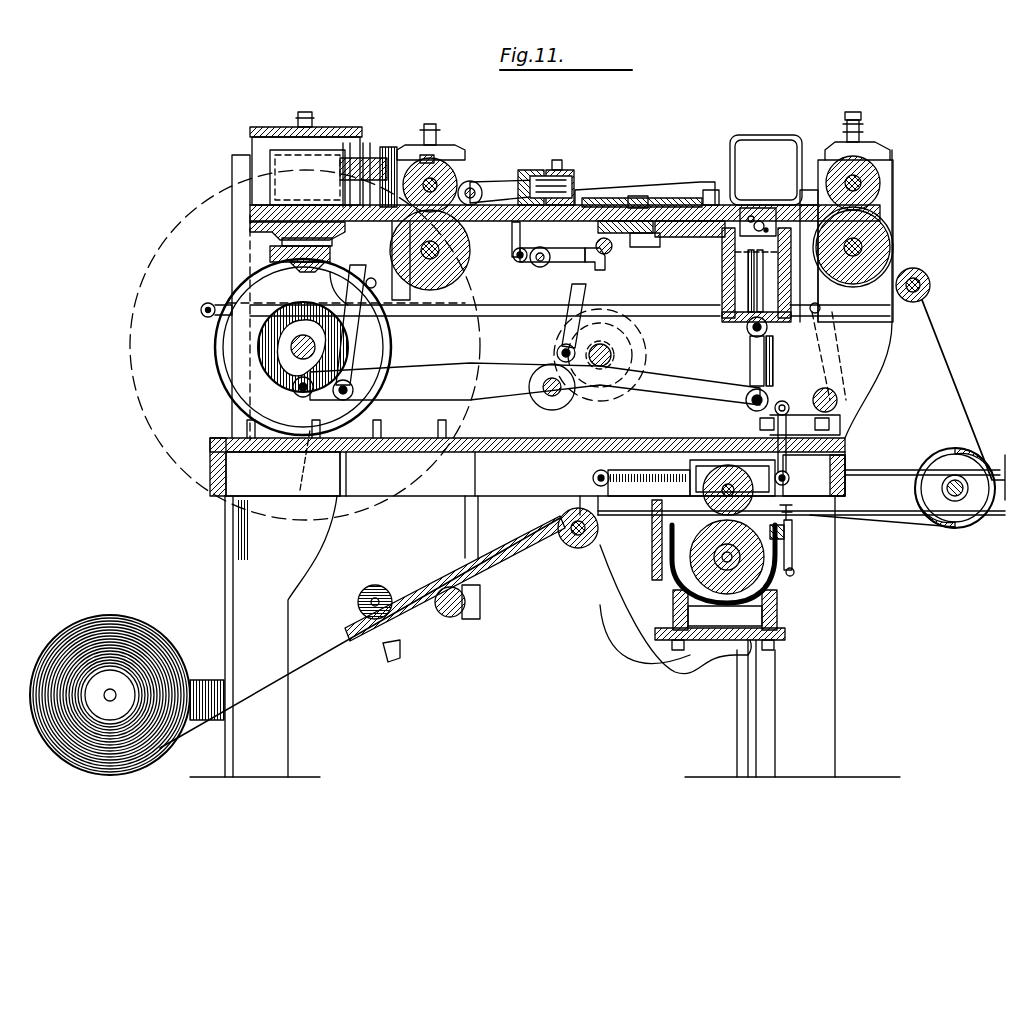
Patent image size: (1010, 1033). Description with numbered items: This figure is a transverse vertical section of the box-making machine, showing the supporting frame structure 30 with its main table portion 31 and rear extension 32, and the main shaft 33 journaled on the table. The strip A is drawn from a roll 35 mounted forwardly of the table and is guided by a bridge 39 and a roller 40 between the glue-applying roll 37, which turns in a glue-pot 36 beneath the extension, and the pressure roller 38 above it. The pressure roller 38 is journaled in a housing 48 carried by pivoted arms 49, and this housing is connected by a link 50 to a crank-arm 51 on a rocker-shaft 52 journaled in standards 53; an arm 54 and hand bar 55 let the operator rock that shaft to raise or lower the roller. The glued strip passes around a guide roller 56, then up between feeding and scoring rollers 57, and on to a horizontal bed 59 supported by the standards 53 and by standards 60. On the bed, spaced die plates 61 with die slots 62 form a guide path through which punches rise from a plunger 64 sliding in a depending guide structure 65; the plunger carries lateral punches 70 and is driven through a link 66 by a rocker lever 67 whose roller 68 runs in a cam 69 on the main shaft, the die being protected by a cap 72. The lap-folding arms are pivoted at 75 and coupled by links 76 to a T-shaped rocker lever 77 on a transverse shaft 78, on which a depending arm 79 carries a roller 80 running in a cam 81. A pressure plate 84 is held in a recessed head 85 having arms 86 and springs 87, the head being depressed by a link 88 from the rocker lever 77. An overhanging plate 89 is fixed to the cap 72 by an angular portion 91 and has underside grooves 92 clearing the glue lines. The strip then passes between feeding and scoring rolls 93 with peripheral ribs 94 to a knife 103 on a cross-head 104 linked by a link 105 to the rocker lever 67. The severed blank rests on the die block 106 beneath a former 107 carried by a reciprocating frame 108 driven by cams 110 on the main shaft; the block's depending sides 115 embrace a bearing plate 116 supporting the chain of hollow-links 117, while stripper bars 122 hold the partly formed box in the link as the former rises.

The supporting frame structure 30 is at (280, 750).
The main table portion 31 is at (212, 445).
The rear extension 32 is at (846, 445).
The main shaft 33 is at (290, 347).
The roll 35 is at (135, 628).
The glue-pot 36 is at (765, 575).
The glue-applying roll 37 is at (760, 512).
The pressure roller 38 is at (726, 465).
The bridge 39 is at (513, 560).
The roller 40 is at (590, 548).
The housing 48 is at (700, 480).
The arms 49 is at (615, 468).
The link 50 is at (810, 475).
The crank-arm 51 is at (796, 395).
The rocker-shaft 52 is at (840, 400).
The standards 53 is at (900, 318).
The arm 54 is at (830, 332).
The hand bar 55 is at (200, 310).
The guide roller 56 is at (948, 512).
The feeding and scoring rollers 57 is at (882, 222).
The horizontal bed 59 is at (625, 186).
The standards 60 is at (344, 213).
The die plates 61 is at (742, 205).
The die slots 62 is at (790, 190).
The plunger 64 is at (740, 320).
The guide structure 65 is at (722, 284).
The link 66 is at (750, 340).
The rocker lever 67 is at (690, 392).
The roller 68 is at (292, 390).
The cam 69 is at (275, 350).
The lateral punches 70 is at (760, 210).
The cap 72 is at (766, 134).
The pivot 75 is at (662, 196).
The links 76 is at (676, 240).
The rocker lever 77 is at (636, 270).
The transverse shaft 78 is at (545, 268).
The depending arm 79 is at (580, 292).
The roller 80 is at (556, 350).
The cam 81 is at (620, 358).
The pressure plate 84 is at (574, 178).
The recessed head 85 is at (562, 168).
The arms 86 is at (488, 180).
The springs 87 is at (531, 170).
The link 88 is at (512, 252).
The plate 89 is at (640, 185).
The angular portion 91 is at (710, 190).
The grooves 92 is at (655, 236).
The feeding and scoring rolls 93 is at (440, 160).
The peripheral ribs 94 is at (430, 122).
The knife 103 is at (356, 140).
The cross-head 104 is at (365, 158).
The link 105 is at (375, 312).
The die block 106 is at (250, 225).
The former 107 is at (307, 177).
The frame 108 is at (270, 127).
The cams 110 is at (283, 463).
The depending sides 115 is at (338, 275).
The bearing plate 116 is at (300, 268).
The chain of hollow-links 117 is at (270, 253).
The stripper bars 122 is at (282, 242).
The strip A is at (270, 205).